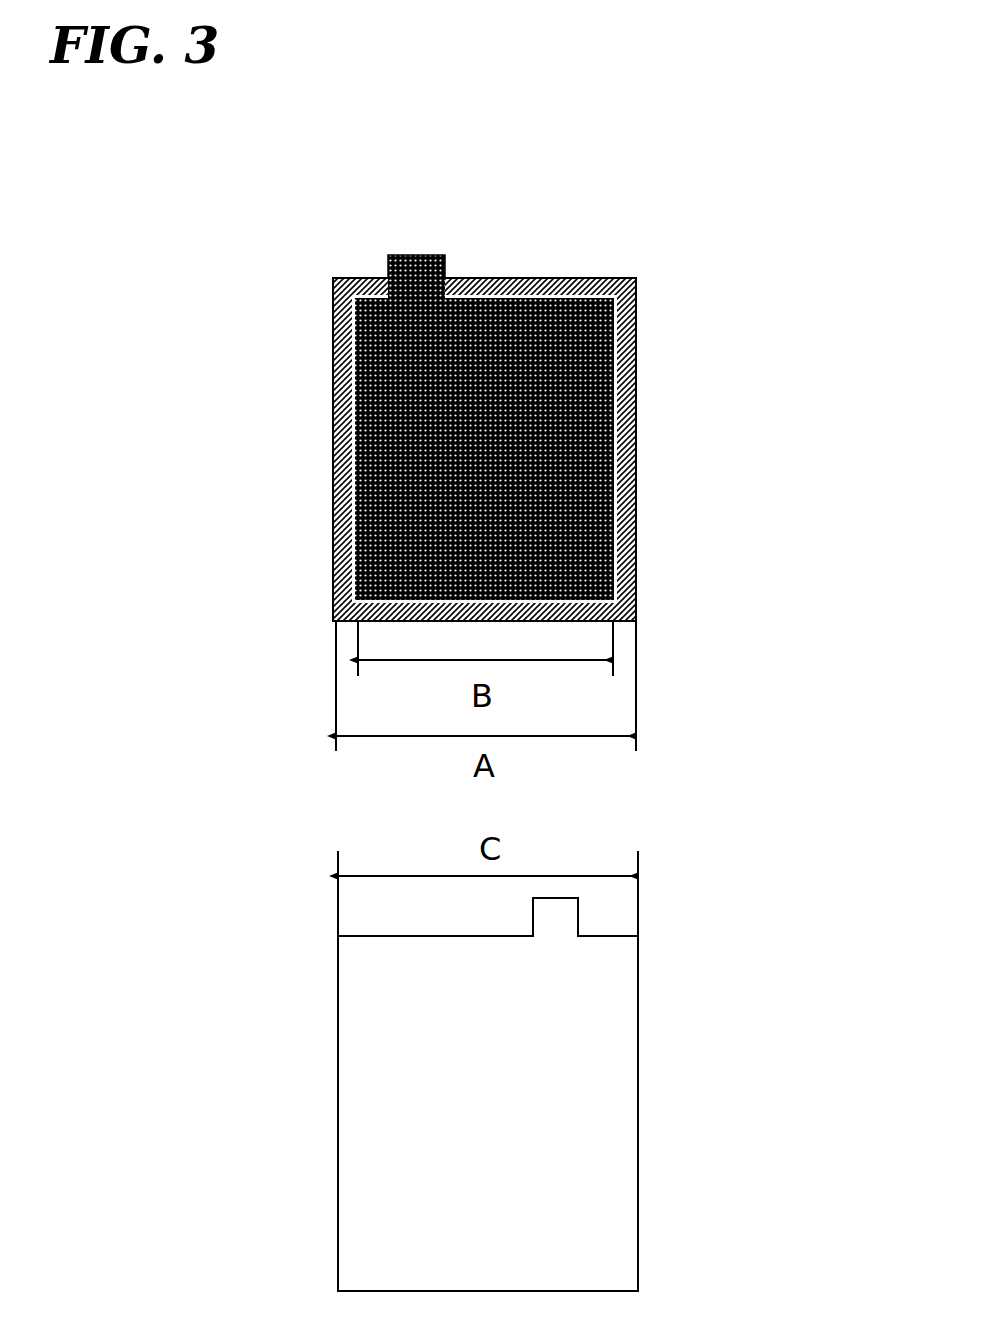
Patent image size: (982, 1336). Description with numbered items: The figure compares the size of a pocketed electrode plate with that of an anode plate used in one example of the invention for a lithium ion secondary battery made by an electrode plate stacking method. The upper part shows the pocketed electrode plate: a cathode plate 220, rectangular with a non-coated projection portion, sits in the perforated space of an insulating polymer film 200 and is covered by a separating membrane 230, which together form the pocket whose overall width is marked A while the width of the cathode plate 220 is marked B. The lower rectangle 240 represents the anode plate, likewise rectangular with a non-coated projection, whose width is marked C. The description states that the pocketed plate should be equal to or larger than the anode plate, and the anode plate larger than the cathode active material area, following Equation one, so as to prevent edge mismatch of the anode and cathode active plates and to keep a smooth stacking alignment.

The insulating polymer film 200 is at (552, 272).
The cathode plate 220 is at (360, 432).
The separating membrane 230 is at (628, 437).
The battery case 240 is at (368, 1132).